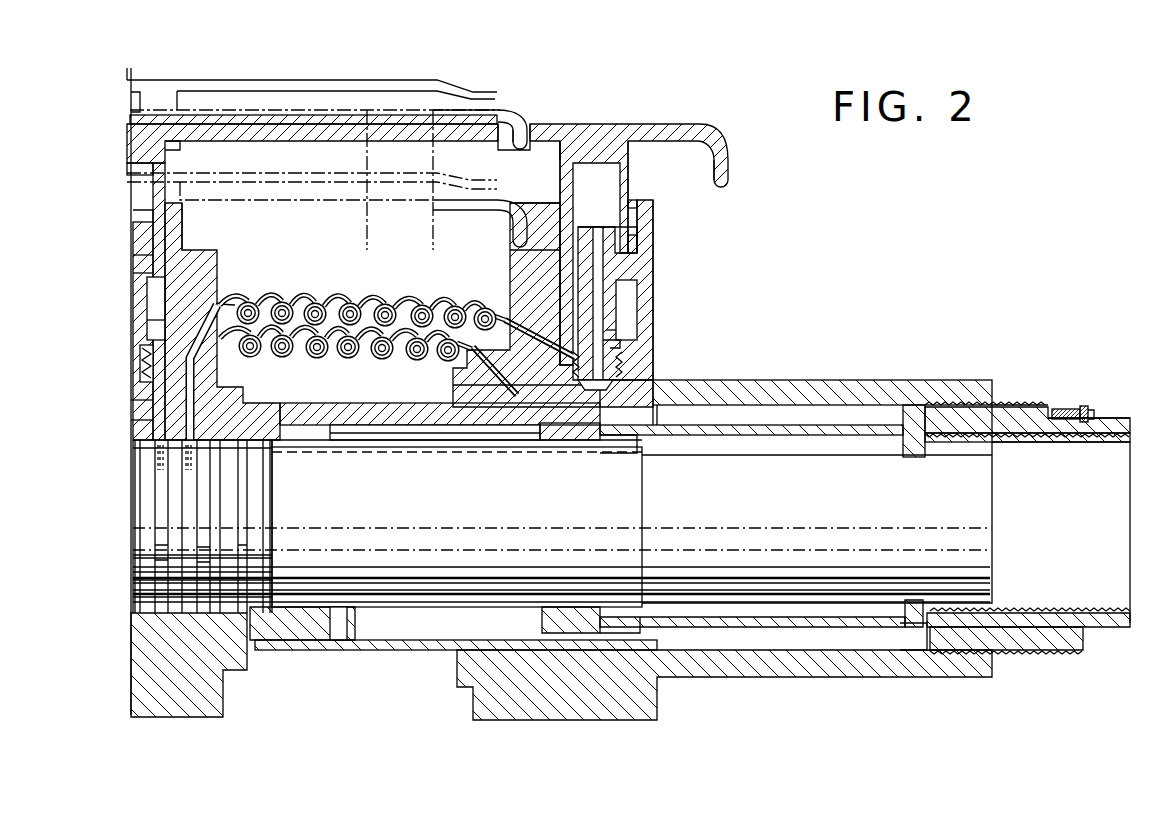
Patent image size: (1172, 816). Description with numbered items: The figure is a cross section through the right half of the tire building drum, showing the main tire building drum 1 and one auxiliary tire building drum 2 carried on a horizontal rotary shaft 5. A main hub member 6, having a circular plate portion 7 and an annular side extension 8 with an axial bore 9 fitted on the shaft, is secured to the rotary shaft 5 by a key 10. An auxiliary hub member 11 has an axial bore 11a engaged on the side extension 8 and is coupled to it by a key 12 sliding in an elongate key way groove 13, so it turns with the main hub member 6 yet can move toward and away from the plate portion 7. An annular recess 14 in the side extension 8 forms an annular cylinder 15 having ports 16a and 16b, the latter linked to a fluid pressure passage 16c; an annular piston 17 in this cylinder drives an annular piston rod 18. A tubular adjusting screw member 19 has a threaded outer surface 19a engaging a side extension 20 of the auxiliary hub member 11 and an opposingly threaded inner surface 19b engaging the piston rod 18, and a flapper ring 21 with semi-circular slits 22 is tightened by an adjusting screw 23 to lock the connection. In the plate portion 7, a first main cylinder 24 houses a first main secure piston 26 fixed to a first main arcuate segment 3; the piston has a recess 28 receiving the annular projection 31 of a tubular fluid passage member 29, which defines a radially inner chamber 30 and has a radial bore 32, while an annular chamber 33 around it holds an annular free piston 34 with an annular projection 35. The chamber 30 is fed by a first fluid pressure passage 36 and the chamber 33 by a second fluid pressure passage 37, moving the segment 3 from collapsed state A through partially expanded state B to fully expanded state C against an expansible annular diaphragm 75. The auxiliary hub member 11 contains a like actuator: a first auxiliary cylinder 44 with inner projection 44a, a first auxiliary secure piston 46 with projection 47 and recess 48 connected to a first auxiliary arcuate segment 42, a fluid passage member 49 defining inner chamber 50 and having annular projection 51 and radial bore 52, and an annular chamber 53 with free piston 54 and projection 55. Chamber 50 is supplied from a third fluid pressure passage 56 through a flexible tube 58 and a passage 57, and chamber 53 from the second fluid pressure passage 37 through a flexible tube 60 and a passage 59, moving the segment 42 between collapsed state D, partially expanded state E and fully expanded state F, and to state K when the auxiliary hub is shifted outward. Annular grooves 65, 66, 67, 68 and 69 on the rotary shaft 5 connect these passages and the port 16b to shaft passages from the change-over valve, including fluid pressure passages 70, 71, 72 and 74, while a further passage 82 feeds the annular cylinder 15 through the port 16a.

The main tire building drum 1 is at (150, 108).
The auxiliary tire building drum 2 is at (566, 99).
The first main arcuate segment 3 is at (130, 108).
The rotary shaft 5 is at (444, 607).
The main hub member 6 is at (247, 288).
The plate portion 7 is at (205, 262).
The annular side extension 8 is at (302, 414).
The axial bore 9 is at (274, 447).
The key 10 is at (407, 442).
The auxiliary hub member 11 is at (652, 308).
The axial bore 11a is at (646, 426).
The key 12 is at (464, 398).
The key way groove 13 is at (332, 414).
The annular recess 14 is at (361, 442).
The annular cylinder 15 is at (455, 442).
The port 16a is at (340, 625).
The port 16b is at (648, 634).
The fluid pressure passage 16c is at (400, 642).
The annular piston 17 is at (527, 442).
The annular piston rod 18 is at (816, 425).
The tubular adjusting screw member 19 is at (1040, 418).
The outer surface 19a is at (1010, 404).
The inner surface 19b is at (1039, 432).
The side extension 20 is at (748, 380).
The flapper ring 21 is at (1083, 406).
The semi-circular slit 22 is at (1066, 408).
The adjusting screw 23 is at (1095, 416).
The first main cylinder 24 is at (163, 302).
The first main secure piston 26 is at (170, 166).
The recess 28 is at (150, 190).
The tubular fluid passage member 29 is at (146, 300).
The radially inner confined chamber 30 is at (137, 384).
The annular projection 31 is at (140, 222).
The radial bore 32 is at (136, 242).
The annular chamber 33 is at (150, 318).
The annular free piston 34 is at (150, 256).
The annular projection 35 is at (150, 276).
The first fluid pressure passage 36 is at (120, 428).
The second fluid pressure passage 37 is at (160, 402).
The first auxiliary arcuate segment 42 is at (603, 124).
The first auxiliary cylinder 44 is at (636, 290).
The inner projection 44a is at (640, 206).
The first auxiliary secure piston 46 is at (560, 190).
The outward projection 47 is at (636, 244).
The recess 48 is at (629, 190).
The tubular fluid passage member 49 is at (620, 328).
The radially inner confined chamber 50 is at (603, 386).
The annular projection 51 is at (600, 228).
The radial bore 52 is at (605, 348).
The annular chamber 53 is at (553, 305).
The annular free piston 54 is at (560, 268).
The annular projection 55 is at (562, 292).
The third fluid pressure passage 56 is at (190, 410).
The fluid pressure passage 57 is at (487, 353).
The flexible tube 58 is at (367, 333).
The fluid pressure passage 59 is at (522, 330).
The flexible tube 60 is at (340, 294).
The annular groove 65 is at (136, 540).
The annular groove 66 is at (160, 557).
The annular groove 67 is at (165, 580).
The annular groove 68 is at (215, 547).
The annular groove 69 is at (250, 564).
The fluid pressure passage 70 is at (136, 466).
The fluid pressure passage 71 is at (160, 462).
The fluid pressure passage 72 is at (186, 468).
The fluid pressure passage 74 is at (264, 586).
The expansible annular diaphragm 75 is at (410, 115).
The fluid pressure passage 82 is at (342, 589).
The collapsed state A is at (297, 156).
The partially expanded state B is at (315, 130).
The ultimately expanded state C is at (298, 78).
The collapsed state D is at (316, 206).
The partially expanded state E is at (378, 132).
The ultimately expanded state F is at (516, 100).
The partially expanded state K is at (722, 134).